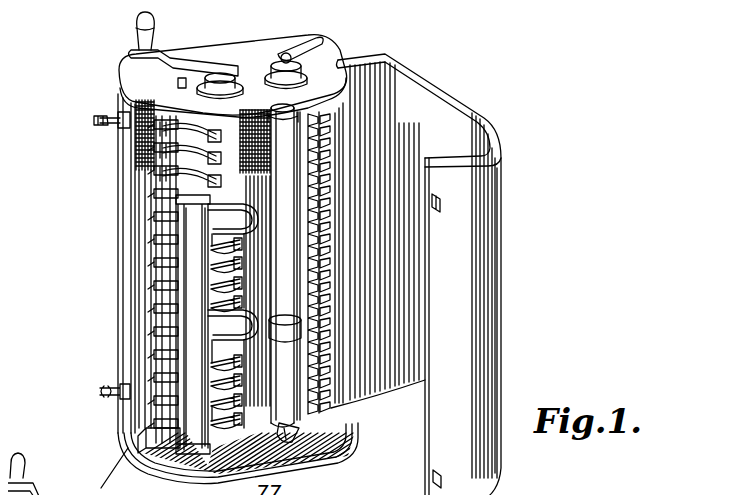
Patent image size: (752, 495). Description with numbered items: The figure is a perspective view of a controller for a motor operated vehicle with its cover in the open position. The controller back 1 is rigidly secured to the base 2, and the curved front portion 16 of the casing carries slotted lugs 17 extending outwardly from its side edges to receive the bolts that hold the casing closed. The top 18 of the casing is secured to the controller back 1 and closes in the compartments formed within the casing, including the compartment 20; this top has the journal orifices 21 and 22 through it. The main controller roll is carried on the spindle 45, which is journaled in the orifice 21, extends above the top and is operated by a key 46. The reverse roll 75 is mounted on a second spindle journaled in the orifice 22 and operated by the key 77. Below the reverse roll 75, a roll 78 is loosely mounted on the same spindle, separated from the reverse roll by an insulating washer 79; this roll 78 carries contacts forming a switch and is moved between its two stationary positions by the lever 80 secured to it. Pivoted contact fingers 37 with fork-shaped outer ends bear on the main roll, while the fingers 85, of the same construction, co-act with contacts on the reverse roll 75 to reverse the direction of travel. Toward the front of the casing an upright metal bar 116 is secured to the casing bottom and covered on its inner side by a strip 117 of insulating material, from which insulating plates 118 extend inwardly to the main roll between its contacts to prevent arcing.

The controller back 1 is at (140, 262).
The base 2 is at (147, 428).
The curved front portion of the casing 16 is at (458, 338).
The slotted lugs 17 is at (445, 197).
The top of the casing 18 is at (128, 66).
The compartment 20 is at (145, 191).
The journal orifice 21 is at (231, 60).
The journal orifice 22 is at (300, 62).
The contact fingers 37 is at (175, 152).
The spindle 45 is at (125, 490).
The key 46 is at (123, 43).
The reverse roll 75 is at (270, 278).
The key 77 is at (282, 40).
The roll 78 is at (305, 410).
The insulating washer 79 is at (307, 316).
The lever 80 is at (300, 449).
The fingers 85 is at (315, 213).
The upright metal bar 116 is at (157, 458).
The strip of insulating material 117 is at (147, 407).
The insulating plates 118 is at (205, 268).